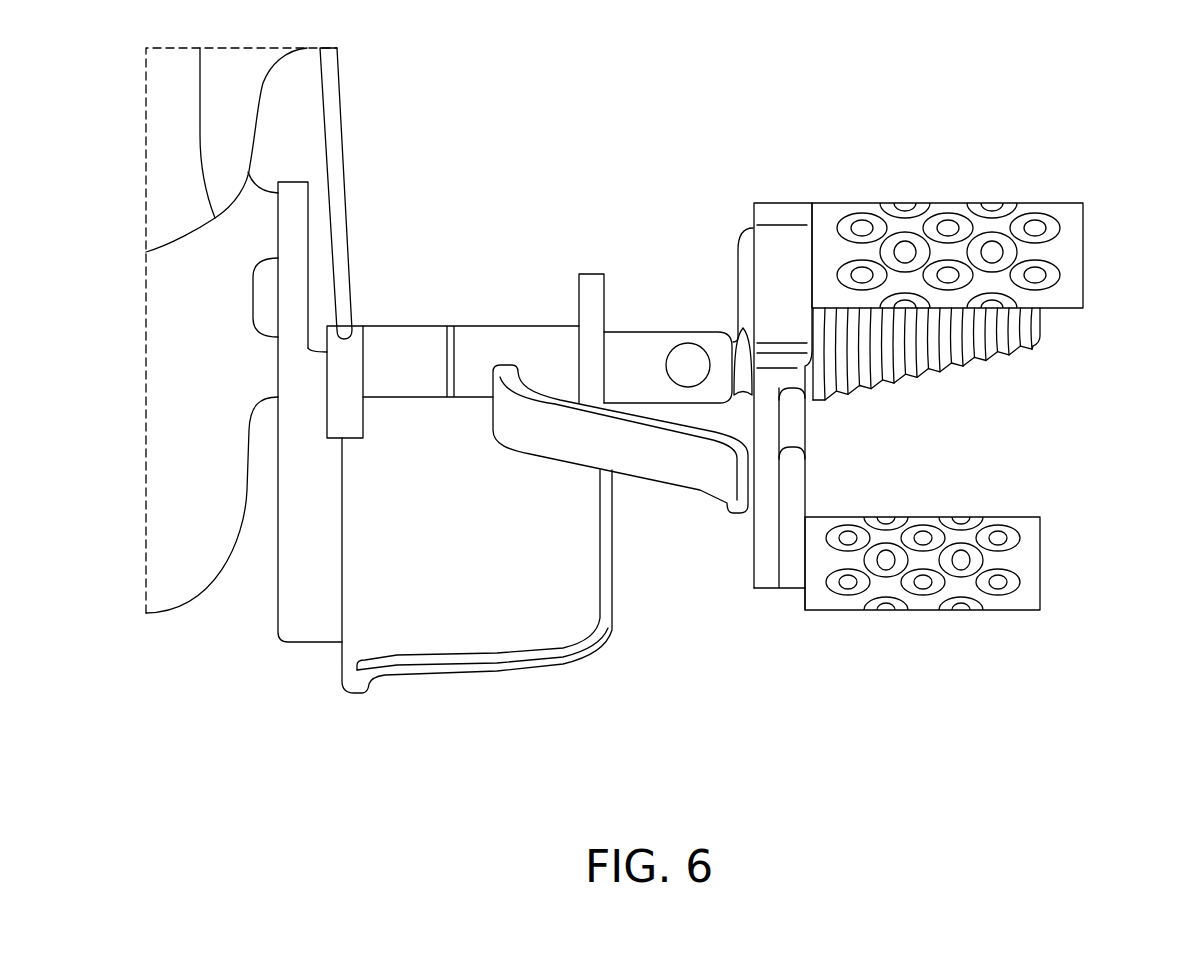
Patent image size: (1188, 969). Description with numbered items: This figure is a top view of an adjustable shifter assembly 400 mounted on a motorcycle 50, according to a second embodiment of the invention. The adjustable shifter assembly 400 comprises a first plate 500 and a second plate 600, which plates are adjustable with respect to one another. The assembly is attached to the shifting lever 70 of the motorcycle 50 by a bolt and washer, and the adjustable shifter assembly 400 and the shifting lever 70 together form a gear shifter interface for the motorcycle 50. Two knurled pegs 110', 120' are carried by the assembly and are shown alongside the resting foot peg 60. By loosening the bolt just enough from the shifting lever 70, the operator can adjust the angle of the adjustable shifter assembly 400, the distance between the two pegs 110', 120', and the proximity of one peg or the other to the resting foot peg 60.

The motorcycle 50 is at (200, 612).
The shifting lever 70 is at (658, 460).
The adjustable shifter assembly 400 is at (810, 456).
The second plate 600 is at (788, 358).
The first plate 500 is at (792, 588).
The peg 120' is at (992, 240).
The resting foot peg 60 is at (1030, 332).
The peg 110' is at (972, 563).